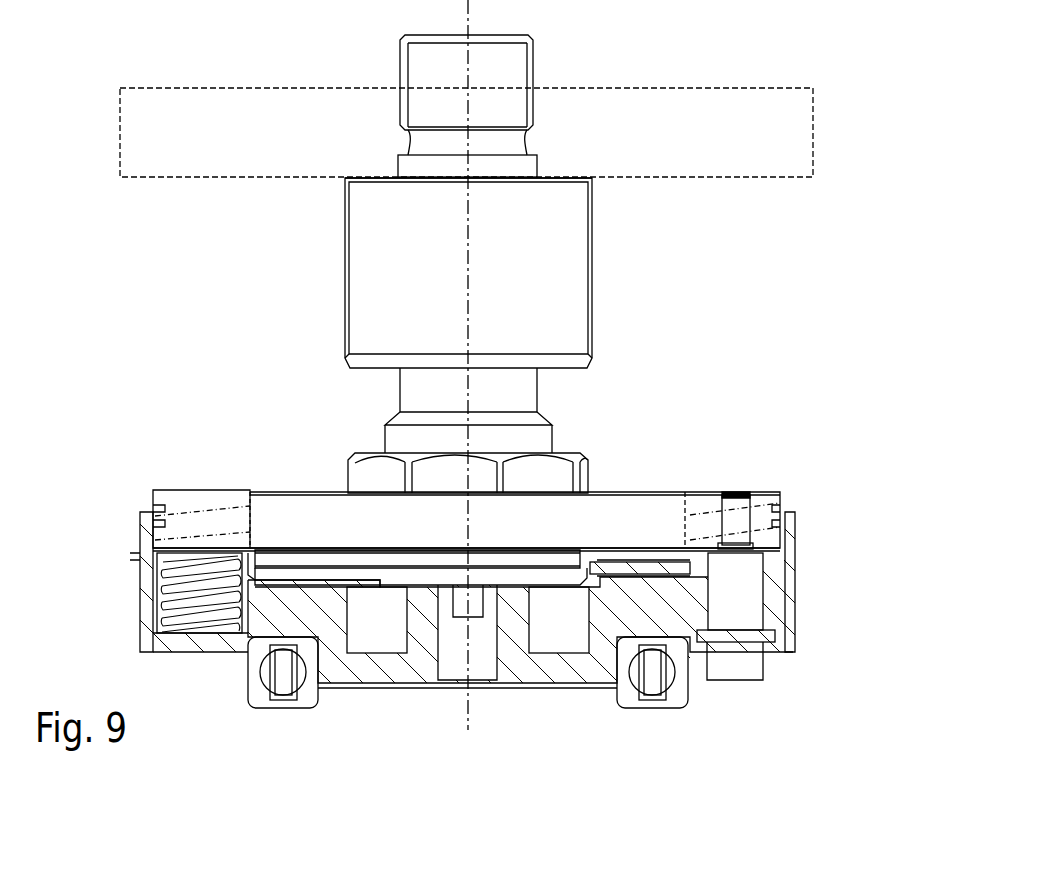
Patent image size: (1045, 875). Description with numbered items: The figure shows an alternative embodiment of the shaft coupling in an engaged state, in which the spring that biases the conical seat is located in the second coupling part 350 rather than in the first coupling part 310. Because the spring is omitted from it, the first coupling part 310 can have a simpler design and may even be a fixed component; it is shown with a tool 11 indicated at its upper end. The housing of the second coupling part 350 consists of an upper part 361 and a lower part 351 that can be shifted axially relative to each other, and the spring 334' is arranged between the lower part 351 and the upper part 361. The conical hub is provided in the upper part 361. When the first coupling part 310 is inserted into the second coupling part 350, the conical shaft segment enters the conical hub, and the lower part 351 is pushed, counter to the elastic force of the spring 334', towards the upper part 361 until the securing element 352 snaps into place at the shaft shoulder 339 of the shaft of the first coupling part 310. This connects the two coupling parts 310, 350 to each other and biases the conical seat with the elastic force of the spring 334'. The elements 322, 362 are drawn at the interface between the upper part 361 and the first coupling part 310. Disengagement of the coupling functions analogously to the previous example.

The tool 11 is at (686, 178).
The first coupling part 310 is at (318, 300).
The second coupling part 350 is at (158, 447).
The upper part 361 is at (210, 507).
The coupling element 322 is at (702, 502).
The coupling element 362 is at (688, 518).
The spring 334' is at (138, 593).
The shaft shoulder 339 is at (580, 568).
The lower part 351 is at (323, 683).
The securing element 352 is at (625, 565).